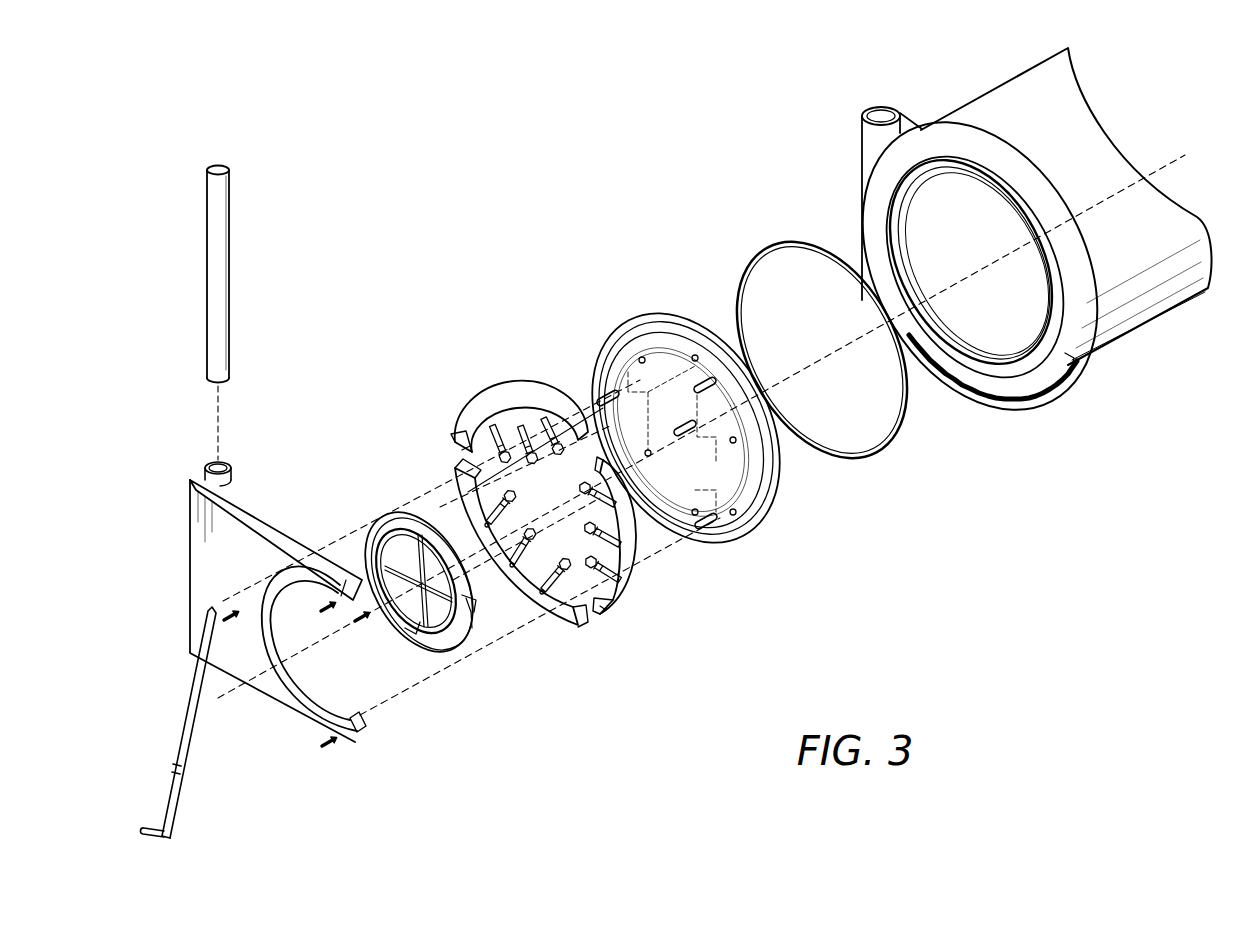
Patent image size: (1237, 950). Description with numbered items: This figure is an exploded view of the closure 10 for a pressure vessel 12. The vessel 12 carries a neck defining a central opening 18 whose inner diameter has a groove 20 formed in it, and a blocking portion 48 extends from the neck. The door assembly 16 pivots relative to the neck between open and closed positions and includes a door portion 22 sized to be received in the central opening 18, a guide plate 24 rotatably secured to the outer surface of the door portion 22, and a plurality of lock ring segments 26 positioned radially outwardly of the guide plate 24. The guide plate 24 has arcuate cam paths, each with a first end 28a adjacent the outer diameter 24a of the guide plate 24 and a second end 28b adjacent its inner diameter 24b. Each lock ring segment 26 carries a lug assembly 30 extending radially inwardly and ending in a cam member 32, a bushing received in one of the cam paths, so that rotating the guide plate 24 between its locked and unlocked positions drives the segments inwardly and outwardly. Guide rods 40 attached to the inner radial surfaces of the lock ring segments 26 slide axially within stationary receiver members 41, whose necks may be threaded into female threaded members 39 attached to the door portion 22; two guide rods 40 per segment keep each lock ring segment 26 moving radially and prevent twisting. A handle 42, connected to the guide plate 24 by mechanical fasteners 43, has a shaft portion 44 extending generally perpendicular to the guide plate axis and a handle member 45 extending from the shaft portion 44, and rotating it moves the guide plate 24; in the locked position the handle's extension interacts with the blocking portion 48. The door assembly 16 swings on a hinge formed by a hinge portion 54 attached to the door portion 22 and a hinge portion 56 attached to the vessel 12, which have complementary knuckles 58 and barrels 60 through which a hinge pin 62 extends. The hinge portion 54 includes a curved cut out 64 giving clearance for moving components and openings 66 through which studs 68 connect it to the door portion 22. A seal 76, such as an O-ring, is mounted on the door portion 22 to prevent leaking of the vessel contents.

The closure 10 is at (757, 108).
The pressure vessel 12 is at (1163, 223).
The door assembly 16 is at (657, 248).
The central opening 18 is at (1013, 299).
The groove 20 is at (903, 235).
The door portion 22 is at (773, 487).
The guide plate 24 is at (383, 522).
The outer diameter of guide plate 24a is at (476, 633).
The inner diameter of guide plate 24b is at (437, 624).
The lock ring segment 26 is at (460, 443).
The first end of cam path 28a is at (478, 605).
The second end of cam path 28b is at (413, 621).
The lug assembly 30 is at (517, 410).
The cam member 32 is at (546, 432).
The female threaded member 39 is at (643, 358).
The guide rod 40 is at (495, 440).
The receiver member 41 is at (577, 595).
The handle 42 is at (156, 722).
The mechanical fasteners 43 is at (150, 779).
The shaft portion 44 is at (187, 748).
The handle member 45 is at (150, 826).
The blocking portion 48 is at (1020, 402).
The hinge portion 54 is at (205, 528).
The hinge portion 56 is at (907, 124).
The knuckle 58 is at (233, 477).
The barrel 60 is at (860, 128).
The hinge pin 62 is at (207, 222).
The curved cut out 64 is at (300, 648).
The openings 66 is at (252, 603).
The studs 68 is at (701, 378).
The seal 76 is at (880, 454).